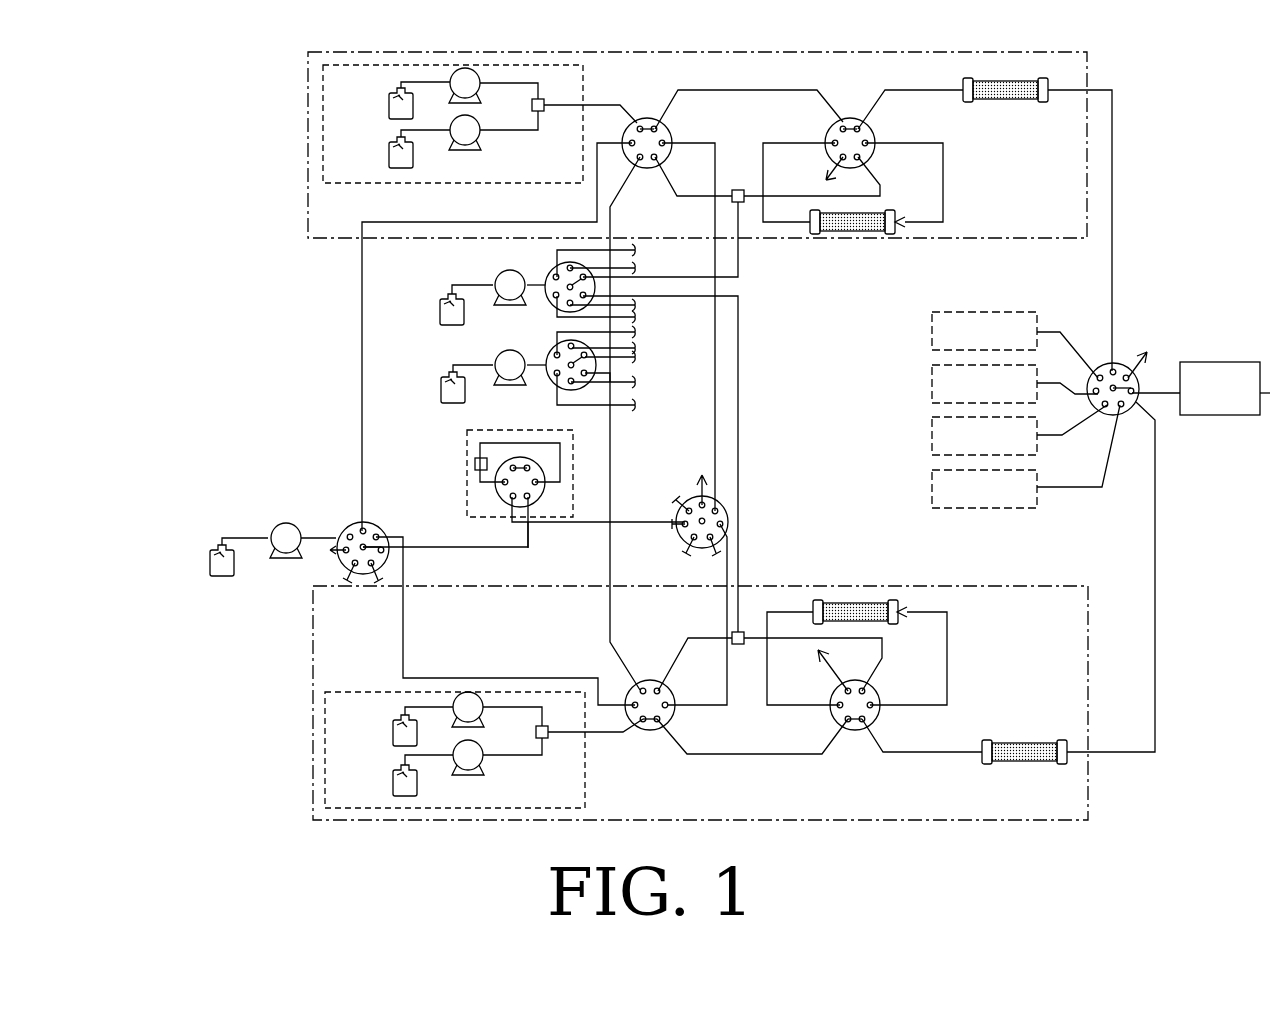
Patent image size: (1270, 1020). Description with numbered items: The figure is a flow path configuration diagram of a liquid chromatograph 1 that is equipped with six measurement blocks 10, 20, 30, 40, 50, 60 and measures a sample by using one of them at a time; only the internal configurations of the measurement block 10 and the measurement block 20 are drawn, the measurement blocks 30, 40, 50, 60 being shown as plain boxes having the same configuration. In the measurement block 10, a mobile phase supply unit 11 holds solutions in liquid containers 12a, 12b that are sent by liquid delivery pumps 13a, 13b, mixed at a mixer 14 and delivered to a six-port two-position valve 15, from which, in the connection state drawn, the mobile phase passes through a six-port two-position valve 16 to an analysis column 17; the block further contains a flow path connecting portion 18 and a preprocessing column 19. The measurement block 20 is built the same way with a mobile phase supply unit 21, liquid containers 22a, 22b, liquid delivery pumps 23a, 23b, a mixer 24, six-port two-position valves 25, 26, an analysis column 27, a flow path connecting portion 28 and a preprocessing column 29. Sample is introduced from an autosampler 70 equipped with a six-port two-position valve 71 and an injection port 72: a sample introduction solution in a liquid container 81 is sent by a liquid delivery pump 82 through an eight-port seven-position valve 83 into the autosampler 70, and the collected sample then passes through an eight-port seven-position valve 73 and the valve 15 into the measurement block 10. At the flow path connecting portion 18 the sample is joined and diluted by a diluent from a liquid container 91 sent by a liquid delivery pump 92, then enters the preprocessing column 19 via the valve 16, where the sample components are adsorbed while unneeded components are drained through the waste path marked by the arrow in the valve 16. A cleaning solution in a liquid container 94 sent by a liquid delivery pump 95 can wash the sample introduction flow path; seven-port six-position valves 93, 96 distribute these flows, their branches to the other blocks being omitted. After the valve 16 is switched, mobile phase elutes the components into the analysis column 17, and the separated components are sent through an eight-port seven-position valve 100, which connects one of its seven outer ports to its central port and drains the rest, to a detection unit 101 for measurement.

The liquid chromatograph 1 is at (248, 64).
The measurement block 10 is at (972, 248).
The mobile phase supply unit 11 is at (585, 91).
The liquid container 12a is at (390, 97).
The liquid container 12b is at (390, 146).
The liquid delivery pump 13a is at (480, 93).
The liquid delivery pump 13b is at (480, 140).
The mixer 14 is at (545, 110).
The 6-port 2-position valve 15 is at (648, 118).
The 6-port 2-position valve 16 is at (850, 118).
The analysis column 17 is at (998, 101).
The flow path connecting portion 18 is at (739, 189).
The preprocessing column 19 is at (882, 212).
The measurement block 20 is at (978, 582).
The mobile phase supply unit 21 is at (586, 791).
The liquid container 22a is at (392, 725).
The liquid container 22b is at (392, 775).
The liquid delivery pump 23a is at (483, 718).
The liquid delivery pump 23b is at (483, 765).
The mixer 24 is at (548, 740).
The 6-port 2-position valve 25 is at (652, 680).
The 6-port 2-position valve 26 is at (858, 732).
The analysis column 27 is at (1010, 741).
The flow path connecting portion 28 is at (741, 646).
The preprocessing column 29 is at (888, 624).
The measurement block 30 is at (929, 331).
The measurement block 40 is at (929, 383).
The measurement block 50 is at (929, 436).
The measurement block 60 is at (929, 488).
The autosampler 70 is at (474, 461).
The 6-port 2-position valve 71 is at (548, 489).
The injection port 72 is at (471, 476).
The 8-port 7-position valve 73 is at (689, 497).
The liquid container 81 is at (210, 556).
The liquid delivery pump 82 is at (292, 560).
The 8-port 7-position valve 83 is at (380, 527).
The liquid container 91 is at (442, 303).
The liquid delivery pump 92 is at (505, 308).
The 7-port 6-position valve 93 is at (548, 306).
The liquid container 94 is at (442, 384).
The liquid delivery pump 95 is at (505, 388).
The 7-port 6-position valve 96 is at (548, 385).
The 8-port 7-position valve 100 is at (1120, 365).
The detection unit 101 is at (1237, 418).